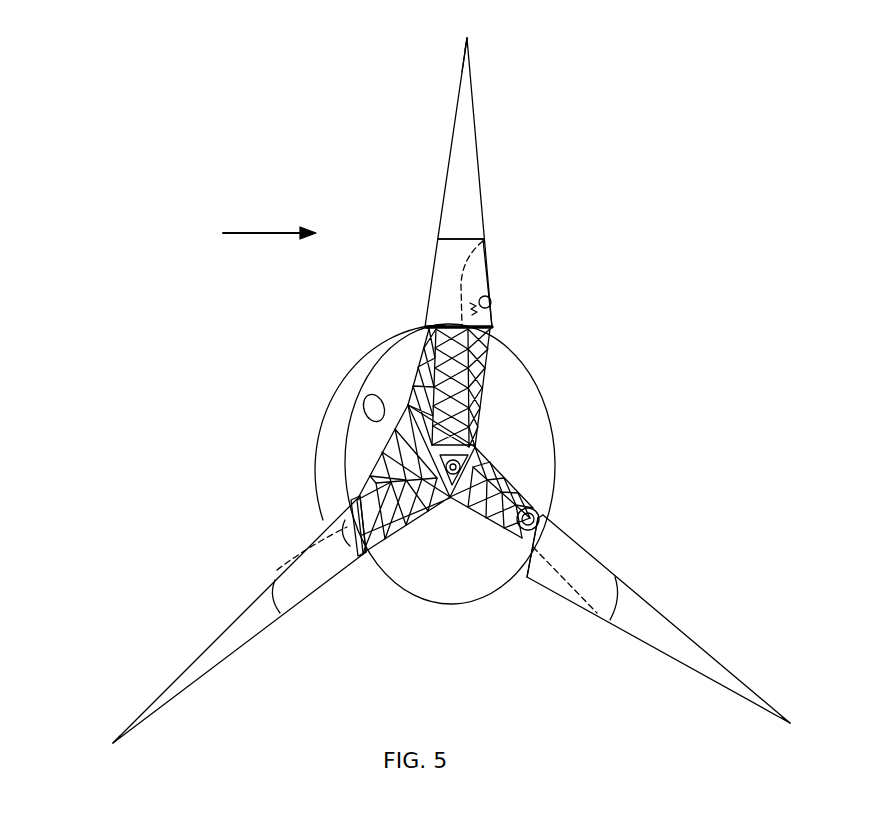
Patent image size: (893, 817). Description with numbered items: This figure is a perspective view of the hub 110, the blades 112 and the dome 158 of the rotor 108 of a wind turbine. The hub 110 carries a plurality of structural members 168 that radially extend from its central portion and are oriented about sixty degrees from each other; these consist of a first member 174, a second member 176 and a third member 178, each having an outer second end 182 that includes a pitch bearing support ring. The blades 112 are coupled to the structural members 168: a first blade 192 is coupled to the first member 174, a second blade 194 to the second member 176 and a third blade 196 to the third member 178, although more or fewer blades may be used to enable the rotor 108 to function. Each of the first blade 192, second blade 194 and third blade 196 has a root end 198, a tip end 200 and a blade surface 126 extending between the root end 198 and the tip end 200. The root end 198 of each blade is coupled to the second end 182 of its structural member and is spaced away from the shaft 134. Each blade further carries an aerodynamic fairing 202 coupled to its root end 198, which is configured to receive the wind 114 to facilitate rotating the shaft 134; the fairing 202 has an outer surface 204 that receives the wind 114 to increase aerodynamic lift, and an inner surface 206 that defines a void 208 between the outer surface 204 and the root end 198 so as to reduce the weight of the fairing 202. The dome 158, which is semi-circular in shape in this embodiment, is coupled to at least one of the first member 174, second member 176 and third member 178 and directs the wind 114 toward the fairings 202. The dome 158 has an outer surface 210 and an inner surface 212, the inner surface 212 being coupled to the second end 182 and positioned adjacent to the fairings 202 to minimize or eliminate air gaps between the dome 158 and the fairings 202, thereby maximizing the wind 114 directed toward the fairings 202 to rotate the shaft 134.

The rotor 108 is at (235, 265).
The hub 110 is at (346, 349).
The blades 112 is at (470, 70).
The wind 114 is at (265, 230).
The blade surface 126 is at (456, 390).
The shaft 134 is at (462, 503).
The dome 158 is at (316, 426).
The structural members 168 is at (467, 465).
The first member 174 is at (423, 357).
The second member 176 is at (532, 508).
The third member 178 is at (400, 530).
The second end 182 is at (425, 327).
The first blade 192 is at (478, 155).
The second blade 194 is at (710, 663).
The third blade 196 is at (200, 672).
The root end 198 is at (477, 332).
The tip end 200 is at (470, 38).
The aerodynamic fairing 202 is at (483, 253).
The outer surface 204 is at (490, 282).
The inner surface 206 is at (492, 304).
The void 208 is at (477, 313).
The outer surface 210 is at (355, 388).
The inner surface 212 is at (360, 420).